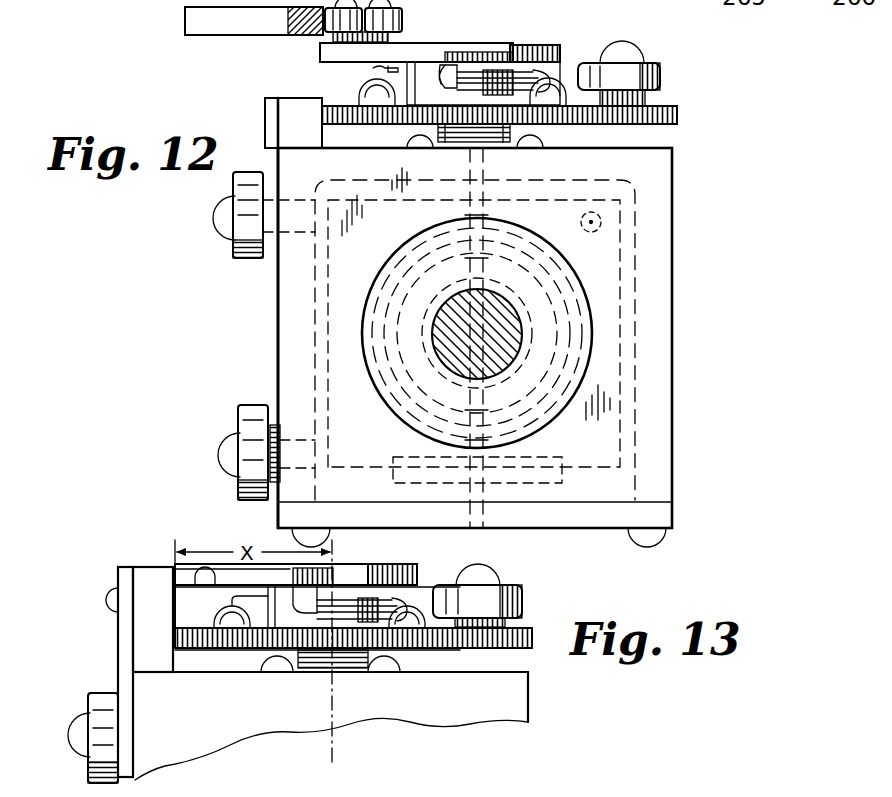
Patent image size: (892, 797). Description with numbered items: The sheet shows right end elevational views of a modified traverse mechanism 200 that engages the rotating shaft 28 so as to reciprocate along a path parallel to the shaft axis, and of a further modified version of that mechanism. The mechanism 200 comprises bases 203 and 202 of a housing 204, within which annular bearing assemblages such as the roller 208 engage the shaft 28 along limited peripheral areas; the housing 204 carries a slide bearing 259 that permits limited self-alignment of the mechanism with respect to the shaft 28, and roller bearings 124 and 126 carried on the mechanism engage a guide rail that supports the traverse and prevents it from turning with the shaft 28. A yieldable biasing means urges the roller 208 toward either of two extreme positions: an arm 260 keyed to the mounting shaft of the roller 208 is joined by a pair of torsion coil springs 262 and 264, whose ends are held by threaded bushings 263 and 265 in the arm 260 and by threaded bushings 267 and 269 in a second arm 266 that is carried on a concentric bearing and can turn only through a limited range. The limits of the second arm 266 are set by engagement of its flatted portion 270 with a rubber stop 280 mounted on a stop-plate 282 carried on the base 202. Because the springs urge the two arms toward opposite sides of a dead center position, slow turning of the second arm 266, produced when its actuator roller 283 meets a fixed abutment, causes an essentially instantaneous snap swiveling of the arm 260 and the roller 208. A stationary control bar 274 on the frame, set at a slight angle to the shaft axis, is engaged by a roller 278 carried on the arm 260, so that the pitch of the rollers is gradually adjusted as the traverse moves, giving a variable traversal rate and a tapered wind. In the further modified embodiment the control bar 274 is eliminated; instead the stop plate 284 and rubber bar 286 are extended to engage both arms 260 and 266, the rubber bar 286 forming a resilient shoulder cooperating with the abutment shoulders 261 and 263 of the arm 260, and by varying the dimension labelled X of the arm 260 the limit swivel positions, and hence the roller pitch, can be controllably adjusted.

In FIG. 12, the shaft 28 is at (505, 330).
In FIG. 12, the roller bearing 124 is at (237, 262).
In FIG. 12, the roller bearing 126 is at (242, 408).
In FIG. 12, the traverse mechanism 200 is at (162, 429).
In FIG. 12, the base 202 is at (668, 173).
In FIG. 13, the base 202 is at (518, 708).
In FIG. 12, the base 203 is at (665, 514).
In FIG. 12, the housing 204 is at (655, 377).
In FIG. 12, the roller 208 is at (581, 222).
In FIG. 12, the slide bearing 259 is at (404, 424).
In FIG. 12, the arm 260 is at (556, 48).
In FIG. 13, the arm 260 is at (418, 568).
In FIG. 13, the abutment shoulder 261 is at (174, 566).
In FIG. 12, the torsion coil spring 262 is at (335, 58).
In FIG. 13, the threaded bushing 263 is at (230, 572).
In FIG. 12, the torsion coil spring 264 is at (487, 72).
In FIG. 12, the threaded bushing 265 is at (445, 75).
In FIG. 12, the second arm 266 is at (680, 117).
In FIG. 13, the second arm 266 is at (532, 633).
In FIG. 12, the threaded bushing 267 is at (365, 92).
In FIG. 12, the threaded bushing 269 is at (552, 88).
In FIG. 12, the flatted portion 270 is at (440, 127).
In FIG. 12, the control bar 274 is at (216, 24).
In FIG. 12, the roller 278 is at (404, 19).
In FIG. 12, the rubber stop 280 is at (292, 112).
In FIG. 12, the stop-plate 282 is at (270, 150).
In FIG. 12, the actuator roller 283 is at (662, 78).
In FIG. 13, the actuator roller 283 is at (524, 598).
In FIG. 13, the stop plate 284 is at (128, 643).
In FIG. 13, the rubber bar 286 is at (148, 578).